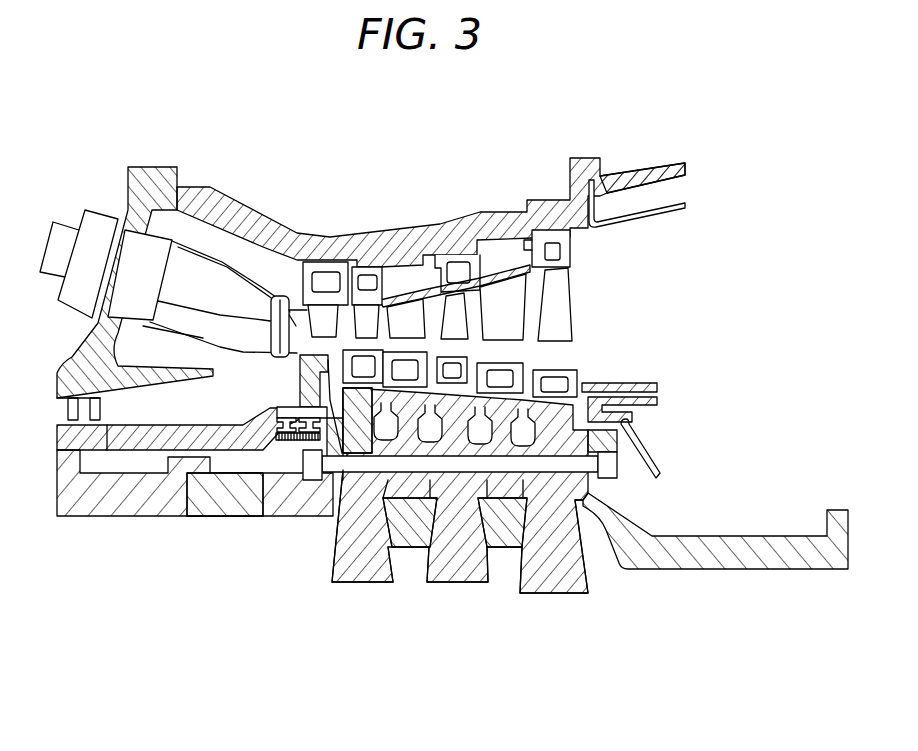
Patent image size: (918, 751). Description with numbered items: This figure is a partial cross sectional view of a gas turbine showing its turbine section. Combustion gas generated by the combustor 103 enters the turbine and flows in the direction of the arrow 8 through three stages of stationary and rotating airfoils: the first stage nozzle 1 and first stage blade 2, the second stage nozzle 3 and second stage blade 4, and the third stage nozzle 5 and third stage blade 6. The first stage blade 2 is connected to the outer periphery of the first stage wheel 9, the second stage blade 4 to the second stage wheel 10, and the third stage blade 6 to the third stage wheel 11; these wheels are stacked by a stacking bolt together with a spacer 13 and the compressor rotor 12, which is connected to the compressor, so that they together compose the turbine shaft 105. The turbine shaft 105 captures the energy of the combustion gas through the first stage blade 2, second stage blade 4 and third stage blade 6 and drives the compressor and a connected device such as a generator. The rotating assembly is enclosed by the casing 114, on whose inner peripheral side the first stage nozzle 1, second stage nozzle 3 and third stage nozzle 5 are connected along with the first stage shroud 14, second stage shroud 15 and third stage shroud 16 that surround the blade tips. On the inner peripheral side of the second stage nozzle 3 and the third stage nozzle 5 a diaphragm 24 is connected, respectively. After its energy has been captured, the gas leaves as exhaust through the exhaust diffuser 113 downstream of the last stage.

The first stage nozzle 1 is at (322, 320).
The first stage blade 2 is at (365, 320).
The second stage nozzle 3 is at (407, 313).
The second stage blade 4 is at (453, 305).
The third stage nozzle 5 is at (507, 303).
The third stage blade 6 is at (563, 314).
The arrow indicating flow direction of combustion gas 8 is at (287, 337).
The first stage wheel 9 is at (365, 584).
The second stage wheel 10 is at (458, 584).
The third stage wheel 11 is at (555, 578).
The compressor rotor 12 is at (113, 518).
The spacer 13 is at (415, 548).
The first stage shroud 14 is at (333, 345).
The second stage shroud 15 is at (430, 297).
The third stage shroud 16 is at (540, 243).
The diaphragm 24 is at (395, 373).
The combustor 103 is at (137, 253).
The turbine shaft 105 is at (848, 653).
The exhaust diffuser 113 is at (650, 174).
The casing 114 is at (226, 192).